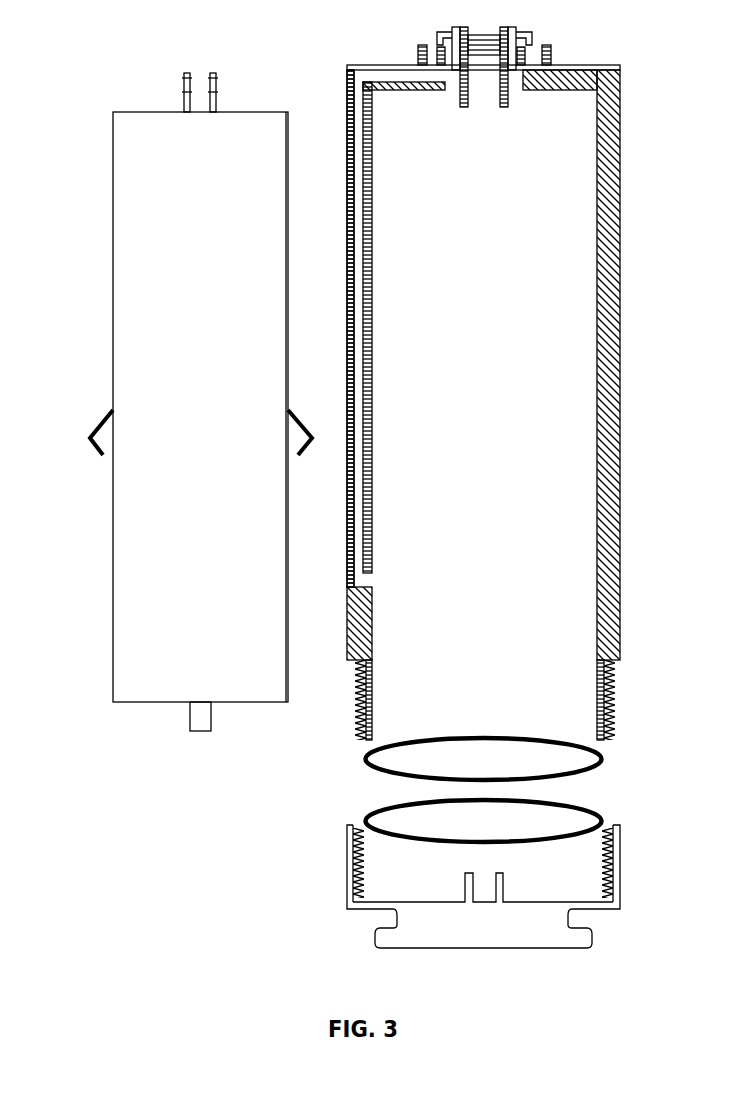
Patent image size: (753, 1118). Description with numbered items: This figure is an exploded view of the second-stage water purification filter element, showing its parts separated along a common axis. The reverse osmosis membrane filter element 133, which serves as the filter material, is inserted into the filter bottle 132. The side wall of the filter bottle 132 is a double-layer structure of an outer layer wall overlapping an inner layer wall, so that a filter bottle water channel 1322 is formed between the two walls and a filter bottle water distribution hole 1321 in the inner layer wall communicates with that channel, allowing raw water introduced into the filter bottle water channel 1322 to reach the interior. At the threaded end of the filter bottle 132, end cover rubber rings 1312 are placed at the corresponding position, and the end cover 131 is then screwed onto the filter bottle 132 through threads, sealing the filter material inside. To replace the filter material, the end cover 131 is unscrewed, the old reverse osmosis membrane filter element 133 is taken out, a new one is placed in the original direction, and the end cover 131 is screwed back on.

The end cover 131 is at (600, 908).
The end cover rubber ring 1312 is at (605, 757).
The filter bottle 132 is at (619, 553).
The filter bottle water distribution hole 1321 is at (372, 580).
The filter bottle water channel 1322 is at (352, 472).
The reverse osmosis membrane filter element 133 is at (113, 572).